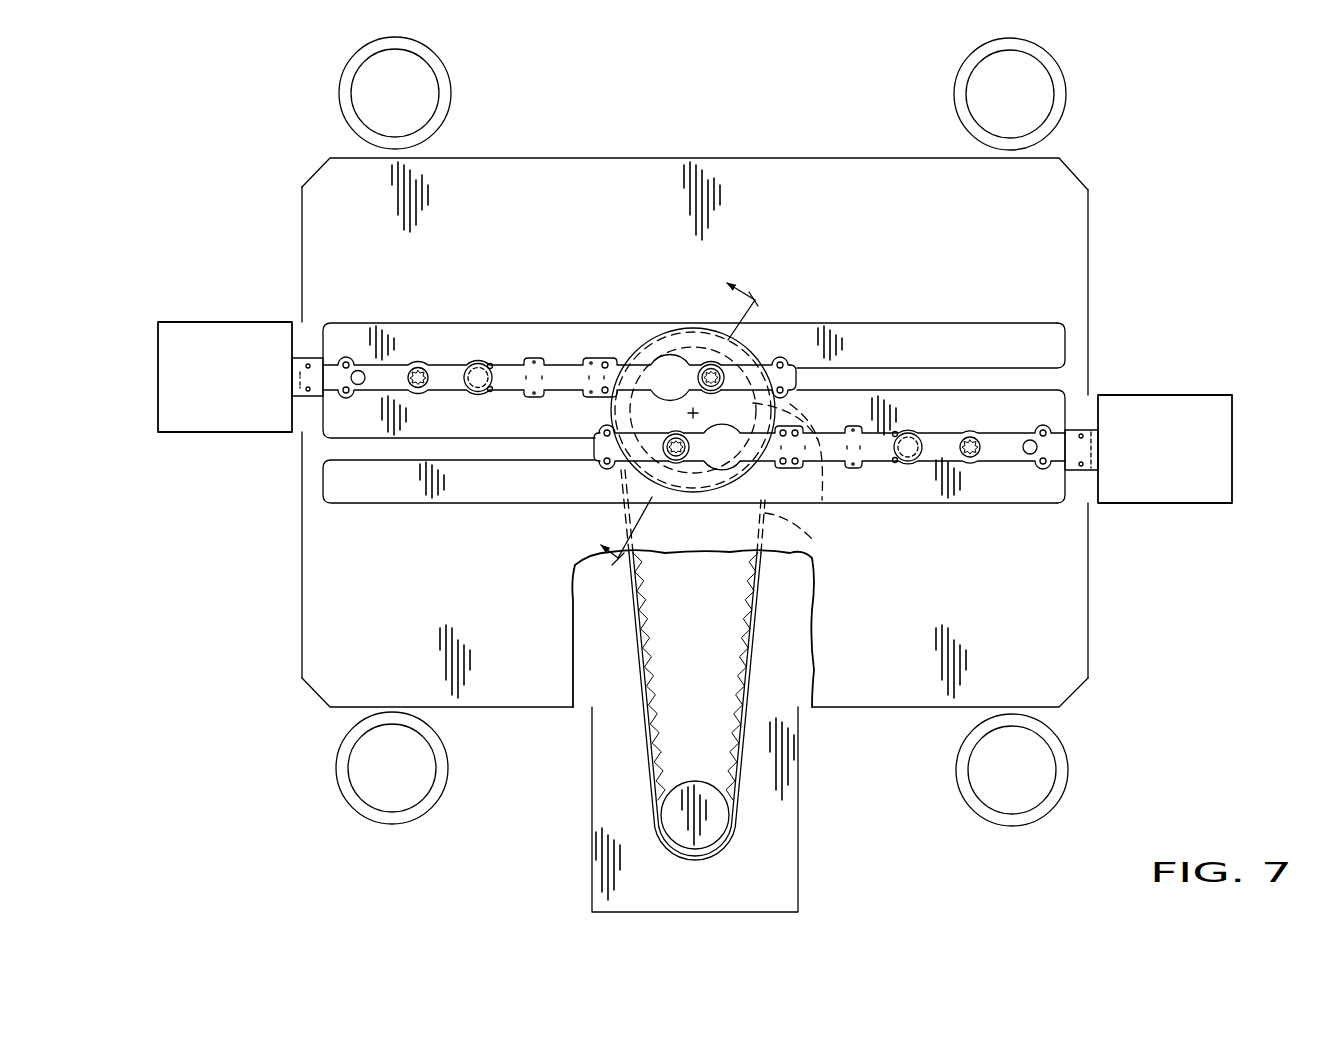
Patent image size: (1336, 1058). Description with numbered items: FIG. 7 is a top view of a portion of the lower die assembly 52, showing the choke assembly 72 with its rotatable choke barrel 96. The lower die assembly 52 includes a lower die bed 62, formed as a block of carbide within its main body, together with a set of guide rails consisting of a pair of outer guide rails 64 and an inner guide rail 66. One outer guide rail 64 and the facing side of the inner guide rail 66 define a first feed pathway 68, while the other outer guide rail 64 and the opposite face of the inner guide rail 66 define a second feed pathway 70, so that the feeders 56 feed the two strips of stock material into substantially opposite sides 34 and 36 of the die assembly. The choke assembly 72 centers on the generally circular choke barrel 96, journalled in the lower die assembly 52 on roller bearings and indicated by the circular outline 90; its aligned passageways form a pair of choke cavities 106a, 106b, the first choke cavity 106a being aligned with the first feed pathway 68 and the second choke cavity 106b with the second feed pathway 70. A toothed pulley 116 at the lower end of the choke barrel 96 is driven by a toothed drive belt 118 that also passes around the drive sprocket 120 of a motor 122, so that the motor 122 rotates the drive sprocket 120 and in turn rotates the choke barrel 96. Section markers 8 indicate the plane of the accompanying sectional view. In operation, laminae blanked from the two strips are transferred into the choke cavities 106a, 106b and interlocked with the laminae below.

The lower die assembly 52 is at (592, 118).
The lower die bed 62 is at (624, 193).
The side of die assembly 36 is at (300, 258).
The side of die assembly 34 is at (1088, 262).
The feeders 56 is at (218, 342).
The choke assembly 72 is at (607, 317).
The outer guide rails 64 is at (965, 342).
The inner guide rail 66 is at (1017, 408).
The second feed pathway 70 is at (290, 377).
The first feed pathway 68 is at (1104, 447).
The first choke cavity 106a is at (662, 462).
The second choke cavity 106b is at (700, 360).
The drive hub 90 is at (757, 340).
The section line 8- 8 is at (665, 415).
The toothed sprocket or pulley 116 is at (821, 492).
The choke barrel 96 is at (851, 471).
The toothed drive belt 118 is at (765, 685).
The drive sprocket 120 is at (708, 825).
The motor 122 is at (786, 884).